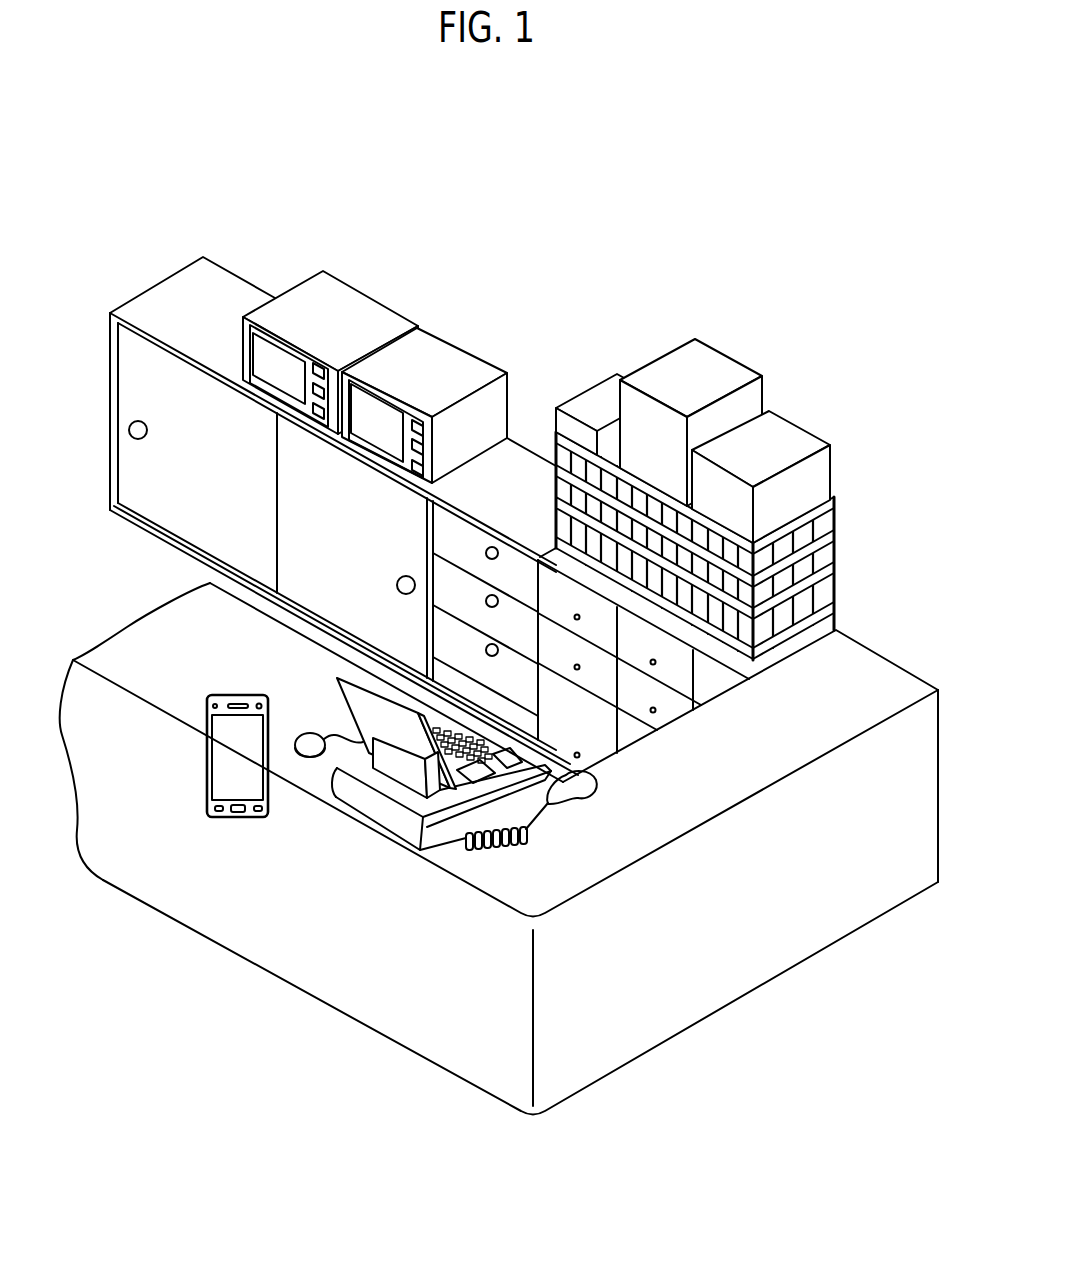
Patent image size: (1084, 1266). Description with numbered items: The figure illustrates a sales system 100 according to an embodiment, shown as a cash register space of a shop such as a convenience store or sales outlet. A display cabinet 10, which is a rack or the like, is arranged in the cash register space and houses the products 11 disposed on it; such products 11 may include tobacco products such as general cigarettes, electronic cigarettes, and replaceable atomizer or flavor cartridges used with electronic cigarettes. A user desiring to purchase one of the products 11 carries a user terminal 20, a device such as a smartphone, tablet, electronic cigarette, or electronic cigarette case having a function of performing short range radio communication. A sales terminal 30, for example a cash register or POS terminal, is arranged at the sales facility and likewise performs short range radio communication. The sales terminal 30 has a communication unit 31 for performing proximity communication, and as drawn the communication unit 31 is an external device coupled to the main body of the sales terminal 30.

The sales system 100 is at (612, 167).
The display cabinet 10 is at (710, 447).
The products 11 is at (817, 560).
The user terminal 20 is at (207, 772).
The sales terminal 30 is at (373, 800).
The communication unit 31 is at (306, 732).